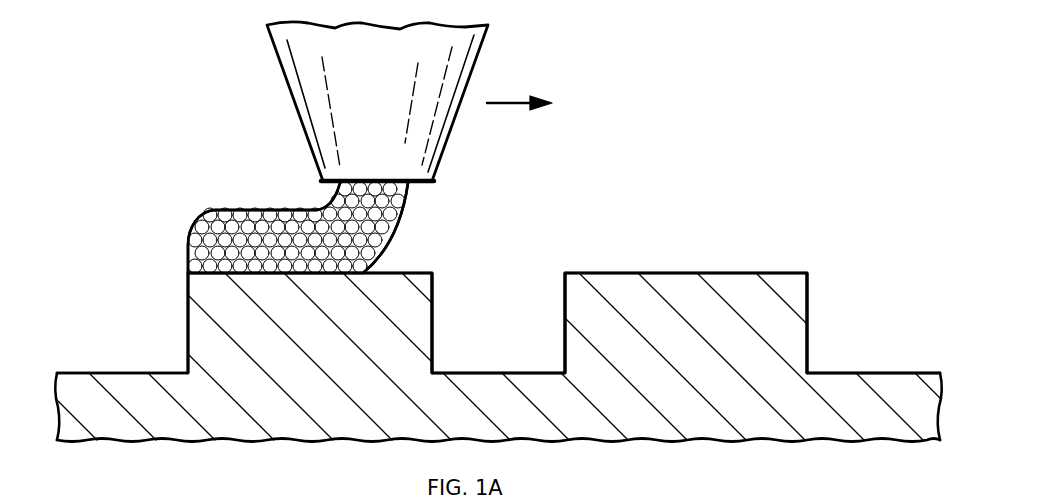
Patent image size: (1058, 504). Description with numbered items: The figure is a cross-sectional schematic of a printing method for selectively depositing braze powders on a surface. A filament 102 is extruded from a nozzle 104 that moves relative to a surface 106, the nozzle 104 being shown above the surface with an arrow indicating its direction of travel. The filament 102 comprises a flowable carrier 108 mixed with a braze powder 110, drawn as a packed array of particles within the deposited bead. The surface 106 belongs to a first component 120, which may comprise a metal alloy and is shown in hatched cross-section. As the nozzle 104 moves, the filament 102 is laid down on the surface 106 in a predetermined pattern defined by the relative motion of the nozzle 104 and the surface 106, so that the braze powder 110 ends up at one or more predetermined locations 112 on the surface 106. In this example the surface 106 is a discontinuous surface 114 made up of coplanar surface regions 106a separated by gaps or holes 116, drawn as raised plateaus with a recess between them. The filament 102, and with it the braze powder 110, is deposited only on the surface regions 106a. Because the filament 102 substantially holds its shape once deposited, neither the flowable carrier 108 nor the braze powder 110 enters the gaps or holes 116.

The filament 102 is at (190, 240).
The nozzle 104 is at (296, 107).
The surface 106 is at (780, 103).
The surface regions 106a is at (423, 272).
The flowable carrier 108 is at (322, 210).
The braze powder 110 is at (233, 218).
The predetermined locations 112 is at (200, 192).
The discontinuous surface 114 is at (780, 103).
The gaps or holes 116 is at (498, 282).
The first component 120 is at (238, 432).